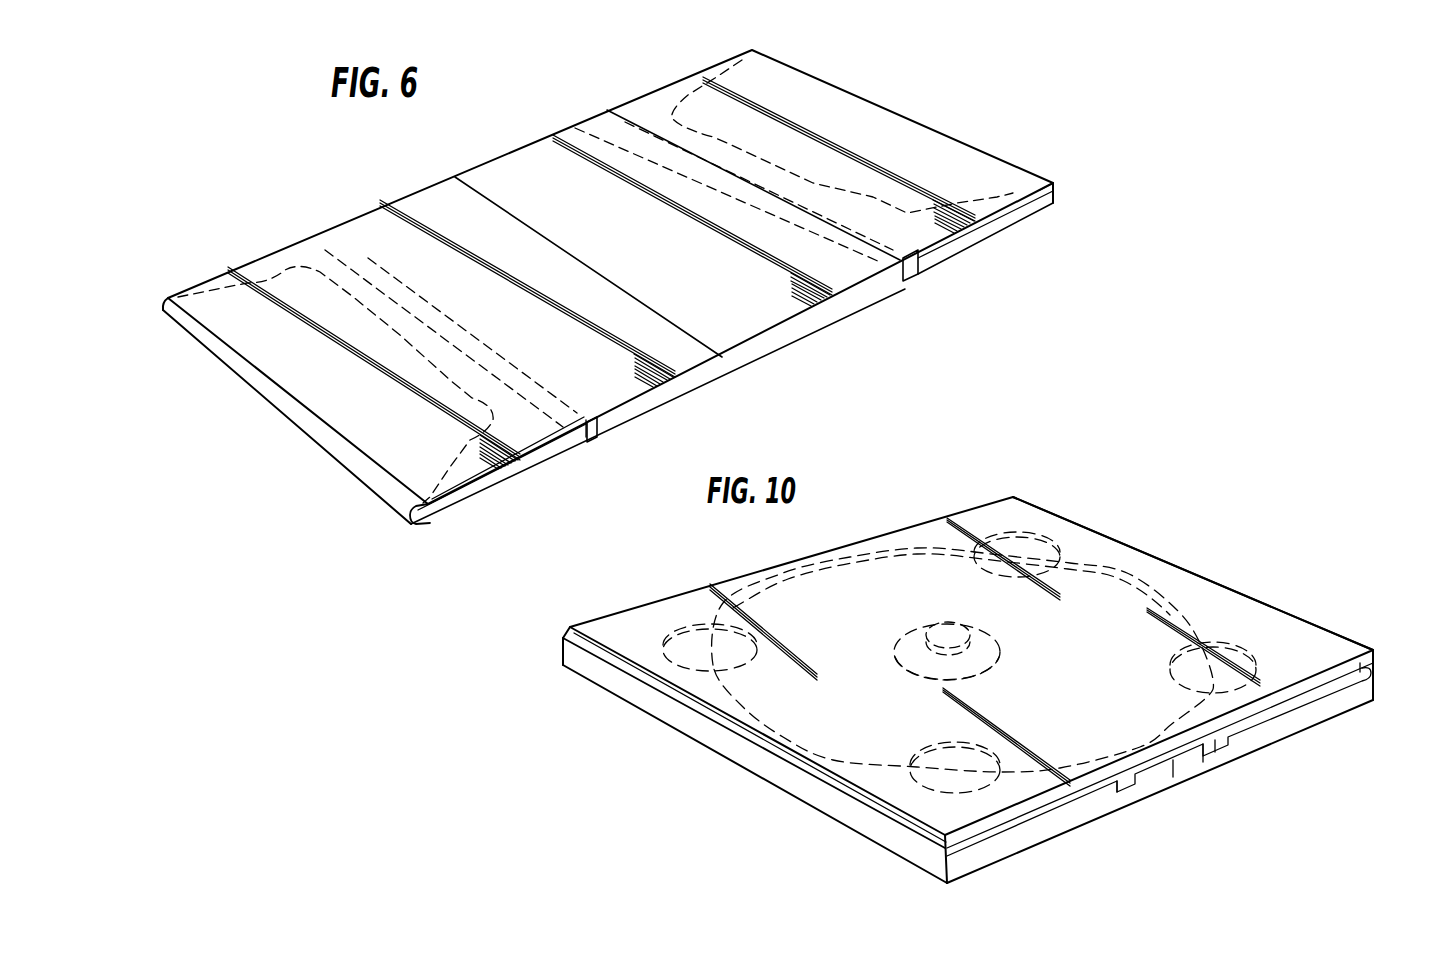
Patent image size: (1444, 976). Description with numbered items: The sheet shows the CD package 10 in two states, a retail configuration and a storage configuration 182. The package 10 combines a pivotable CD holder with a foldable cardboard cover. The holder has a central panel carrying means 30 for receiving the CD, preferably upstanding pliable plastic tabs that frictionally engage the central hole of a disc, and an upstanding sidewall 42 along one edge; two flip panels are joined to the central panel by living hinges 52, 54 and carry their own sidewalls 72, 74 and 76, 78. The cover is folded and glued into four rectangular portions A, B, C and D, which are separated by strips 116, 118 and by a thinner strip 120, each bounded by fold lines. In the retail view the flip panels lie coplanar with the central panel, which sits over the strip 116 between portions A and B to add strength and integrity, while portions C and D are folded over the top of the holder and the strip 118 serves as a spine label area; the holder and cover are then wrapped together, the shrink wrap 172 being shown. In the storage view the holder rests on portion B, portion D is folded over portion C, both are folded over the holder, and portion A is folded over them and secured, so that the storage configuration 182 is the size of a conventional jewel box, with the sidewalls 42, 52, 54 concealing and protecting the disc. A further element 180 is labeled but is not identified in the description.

In FIG. 6, the CD package 10 is at (557, 77).
In FIG. 10, the CD package 10 is at (1163, 473).
In FIG. 6, the panel 180 is at (524, 152).
In FIG. 6, the shrink wrap 172 is at (396, 228).
In FIG. 6, the sidewall 72 is at (170, 307).
In FIG. 6, the sidewall 74 is at (433, 512).
In FIG. 10, the sidewall 74 is at (1157, 778).
In FIG. 6, the living hinge 52 is at (592, 440).
In FIG. 6, the living hinge 54 is at (908, 278).
In FIG. 6, the thinner strip 120 is at (690, 335).
In FIG. 10, the thinner strip 120 is at (1375, 650).
In FIG. 6, the sidewall 42 is at (794, 332).
In FIG. 10, the sidewall 42 is at (1307, 720).
In FIG. 6, the strip 118 is at (1054, 186).
In FIG. 10, the strip 118 is at (880, 833).
In FIG. 6, the sidewall 76 is at (762, 50).
In FIG. 10, the storage configuration 182 is at (968, 517).
In FIG. 10, the means for receiving the CD 30 is at (980, 650).
In FIG. 10, the strip 116 is at (1378, 660).
In FIG. 10, the sidewall 78 is at (1217, 750).
In FIG. 6, the rectangular portion A is at (560, 462).
In FIG. 10, the rectangular portion A is at (647, 612).
In FIG. 6, the rectangular portion B is at (995, 232).
In FIG. 10, the rectangular portion B is at (1127, 805).
In FIG. 6, the rectangular portion C is at (655, 102).
In FIG. 10, the rectangular portion C is at (1258, 705).
In FIG. 6, the rectangular portion D is at (289, 252).
In FIG. 10, the rectangular portion D is at (1203, 742).